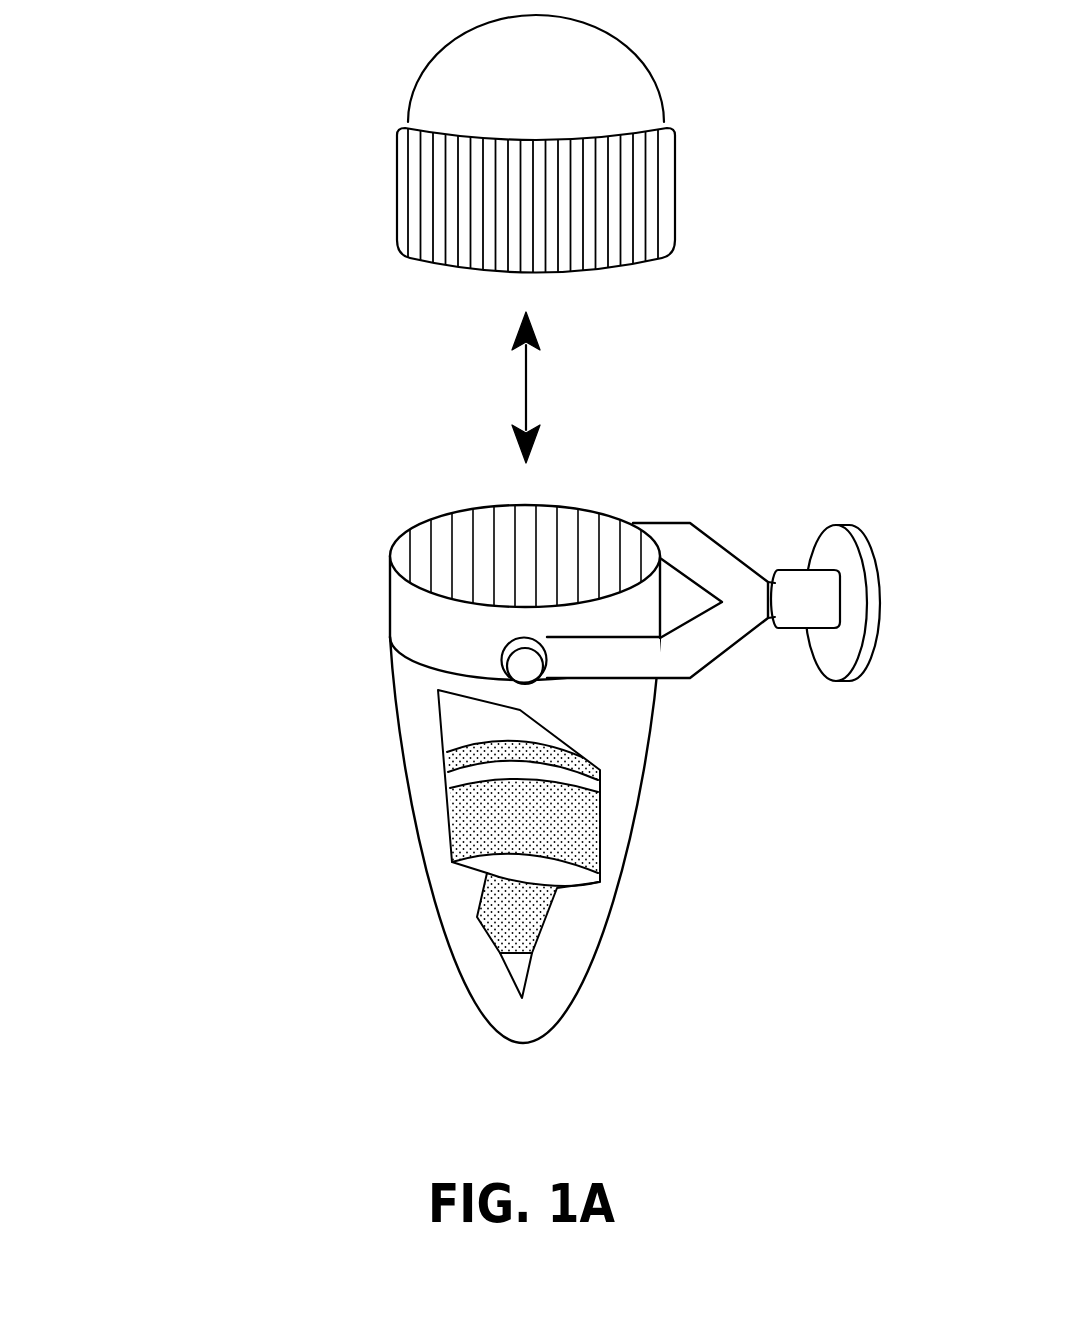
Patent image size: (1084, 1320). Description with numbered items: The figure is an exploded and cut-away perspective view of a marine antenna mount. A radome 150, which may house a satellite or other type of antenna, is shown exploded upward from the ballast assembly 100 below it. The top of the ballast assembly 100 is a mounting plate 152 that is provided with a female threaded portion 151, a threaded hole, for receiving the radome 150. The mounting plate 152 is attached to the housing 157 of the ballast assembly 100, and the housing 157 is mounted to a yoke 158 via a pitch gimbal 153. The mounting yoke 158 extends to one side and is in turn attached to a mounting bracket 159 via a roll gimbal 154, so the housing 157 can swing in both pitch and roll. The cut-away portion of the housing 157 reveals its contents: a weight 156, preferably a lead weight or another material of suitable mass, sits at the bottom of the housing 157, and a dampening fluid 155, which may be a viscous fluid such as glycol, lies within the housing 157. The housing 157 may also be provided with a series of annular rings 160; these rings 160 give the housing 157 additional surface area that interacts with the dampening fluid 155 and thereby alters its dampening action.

The ballast assembly 100 is at (203, 485).
The radome 150 is at (415, 82).
The female threaded portion 151 is at (510, 530).
The mounting plate 152 is at (443, 512).
The pitch gimbal 153 is at (497, 655).
The roll gimbal 154 is at (777, 630).
The dampening fluid 155 is at (452, 855).
The weight 156 is at (518, 982).
The housing 157 is at (643, 798).
The yoke 158 is at (708, 533).
The mounting bracket 159 is at (873, 567).
The annular rings 160 is at (593, 757).